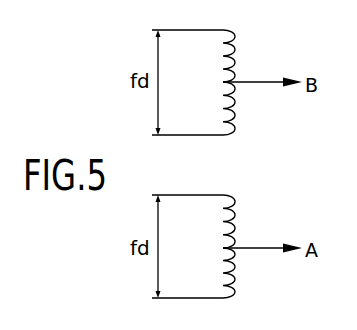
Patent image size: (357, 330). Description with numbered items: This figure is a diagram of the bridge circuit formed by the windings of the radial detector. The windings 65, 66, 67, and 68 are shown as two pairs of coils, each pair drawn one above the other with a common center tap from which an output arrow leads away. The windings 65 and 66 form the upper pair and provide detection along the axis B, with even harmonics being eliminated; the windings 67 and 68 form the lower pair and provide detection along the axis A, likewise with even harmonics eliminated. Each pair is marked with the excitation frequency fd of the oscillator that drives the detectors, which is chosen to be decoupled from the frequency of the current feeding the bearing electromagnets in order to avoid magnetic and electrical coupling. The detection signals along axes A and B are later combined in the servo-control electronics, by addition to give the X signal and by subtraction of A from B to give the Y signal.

The winding 65 is at (237, 54).
The winding 66 is at (236, 111).
The winding 67 is at (237, 213).
The winding 68 is at (236, 274).